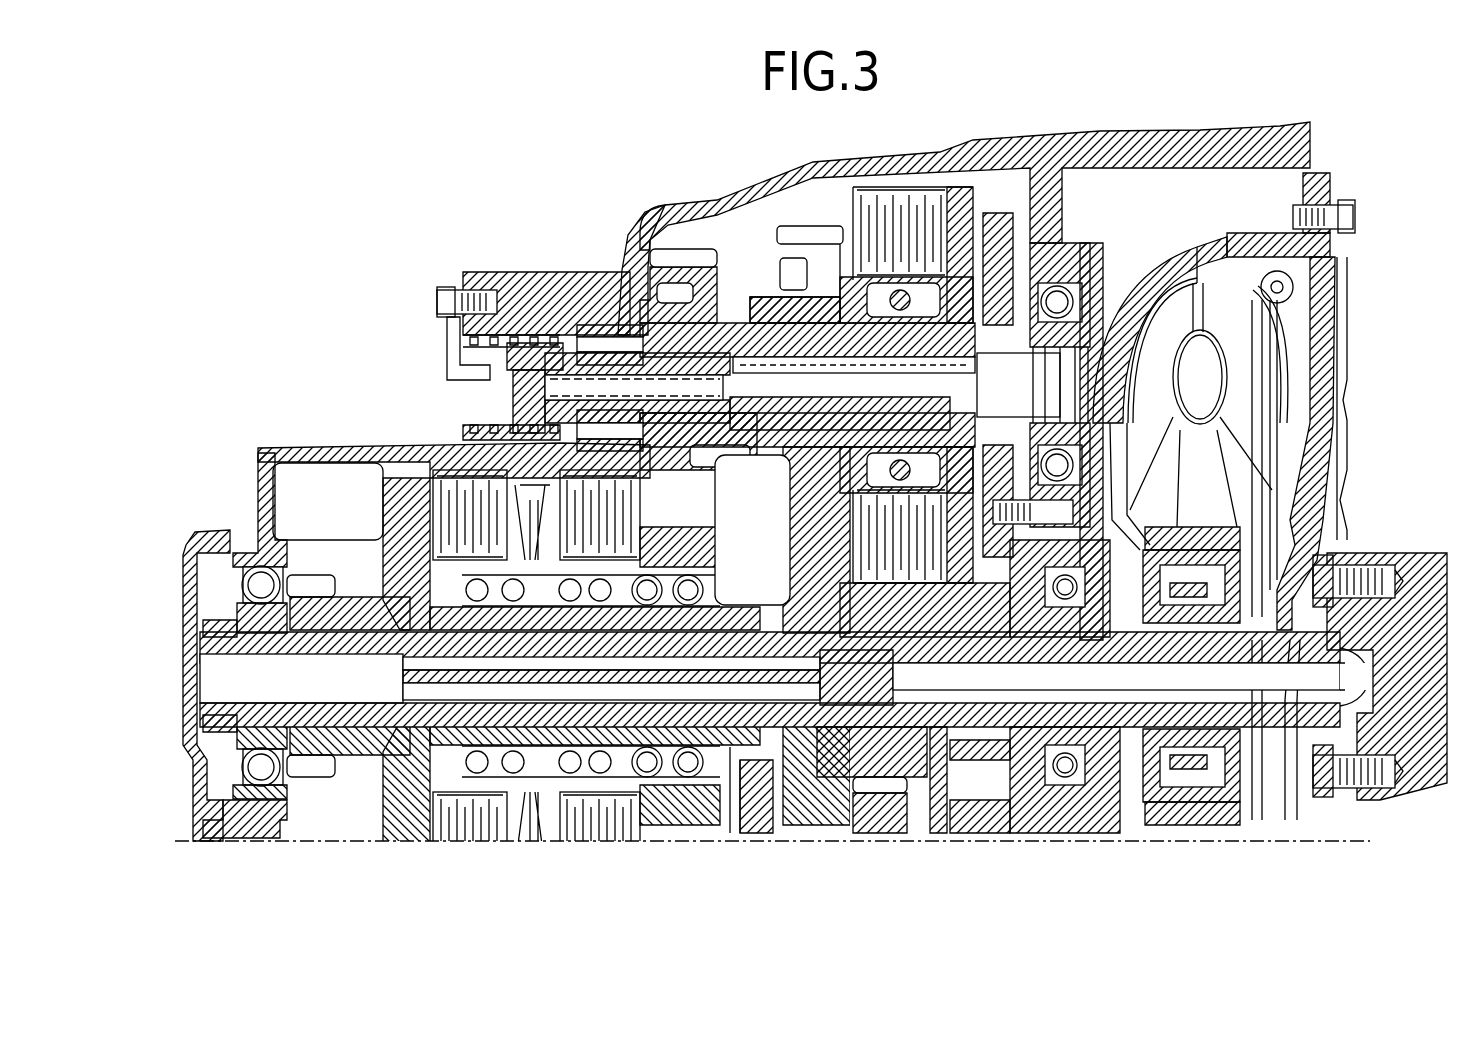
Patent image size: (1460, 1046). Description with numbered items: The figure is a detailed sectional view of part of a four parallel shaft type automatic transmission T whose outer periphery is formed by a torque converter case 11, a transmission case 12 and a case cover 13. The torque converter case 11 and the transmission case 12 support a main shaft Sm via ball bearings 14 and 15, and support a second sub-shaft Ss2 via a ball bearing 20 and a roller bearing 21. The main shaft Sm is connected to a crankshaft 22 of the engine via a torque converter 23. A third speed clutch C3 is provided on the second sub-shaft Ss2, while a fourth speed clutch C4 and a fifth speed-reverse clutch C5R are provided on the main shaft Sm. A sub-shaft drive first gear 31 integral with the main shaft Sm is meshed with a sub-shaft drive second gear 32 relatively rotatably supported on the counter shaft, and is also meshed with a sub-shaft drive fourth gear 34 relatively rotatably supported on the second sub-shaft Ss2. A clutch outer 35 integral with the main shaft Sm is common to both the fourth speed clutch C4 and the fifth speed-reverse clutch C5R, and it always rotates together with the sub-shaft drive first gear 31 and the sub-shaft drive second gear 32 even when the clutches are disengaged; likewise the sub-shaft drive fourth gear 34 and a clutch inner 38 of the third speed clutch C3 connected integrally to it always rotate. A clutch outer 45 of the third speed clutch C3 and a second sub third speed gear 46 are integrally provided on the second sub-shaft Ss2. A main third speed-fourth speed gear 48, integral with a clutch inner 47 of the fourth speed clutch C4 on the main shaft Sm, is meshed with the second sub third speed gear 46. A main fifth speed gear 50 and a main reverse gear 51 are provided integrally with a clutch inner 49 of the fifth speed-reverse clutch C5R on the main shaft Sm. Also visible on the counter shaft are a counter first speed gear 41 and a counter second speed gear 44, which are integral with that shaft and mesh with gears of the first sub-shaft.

The automatic transmission T is at (427, 357).
The torque converter case 11 is at (1130, 145).
The transmission case 12 is at (688, 245).
The case cover 13 is at (203, 532).
The ball bearing 14 is at (1110, 530).
The ball bearing 15 is at (263, 580).
The ball bearing 20 is at (1057, 302).
The roller bearing 21 is at (613, 340).
The crankshaft 22 is at (1427, 577).
The torque converter 23 is at (1199, 245).
The sub-shaft drive first gear 31 is at (780, 548).
The sub-shaft drive second gear 32 is at (823, 840).
The sub-shaft drive fourth gear 34 is at (803, 232).
The clutch outer 35 is at (537, 490).
The clutch inner 38 is at (933, 273).
The counter first speed gear 41 is at (760, 757).
The counter second speed gear 44 is at (920, 797).
The clutch outer 45 is at (897, 190).
The second sub third speed gear 46 is at (683, 252).
The clutch inner 47 is at (597, 590).
The main third speed-fourth speed gear 48 is at (793, 547).
The clutch inner 49 is at (417, 658).
The main fifth speed gear 50 is at (397, 490).
The main reverse gear 51 is at (313, 580).
The third speed clutch C3 is at (917, 190).
The fourth speed clutch C4 is at (708, 520).
The fifth speed-reverse clutch C5R is at (480, 465).
The second sub-shaft Ss2 is at (841, 415).
The main shaft Sm is at (1104, 692).